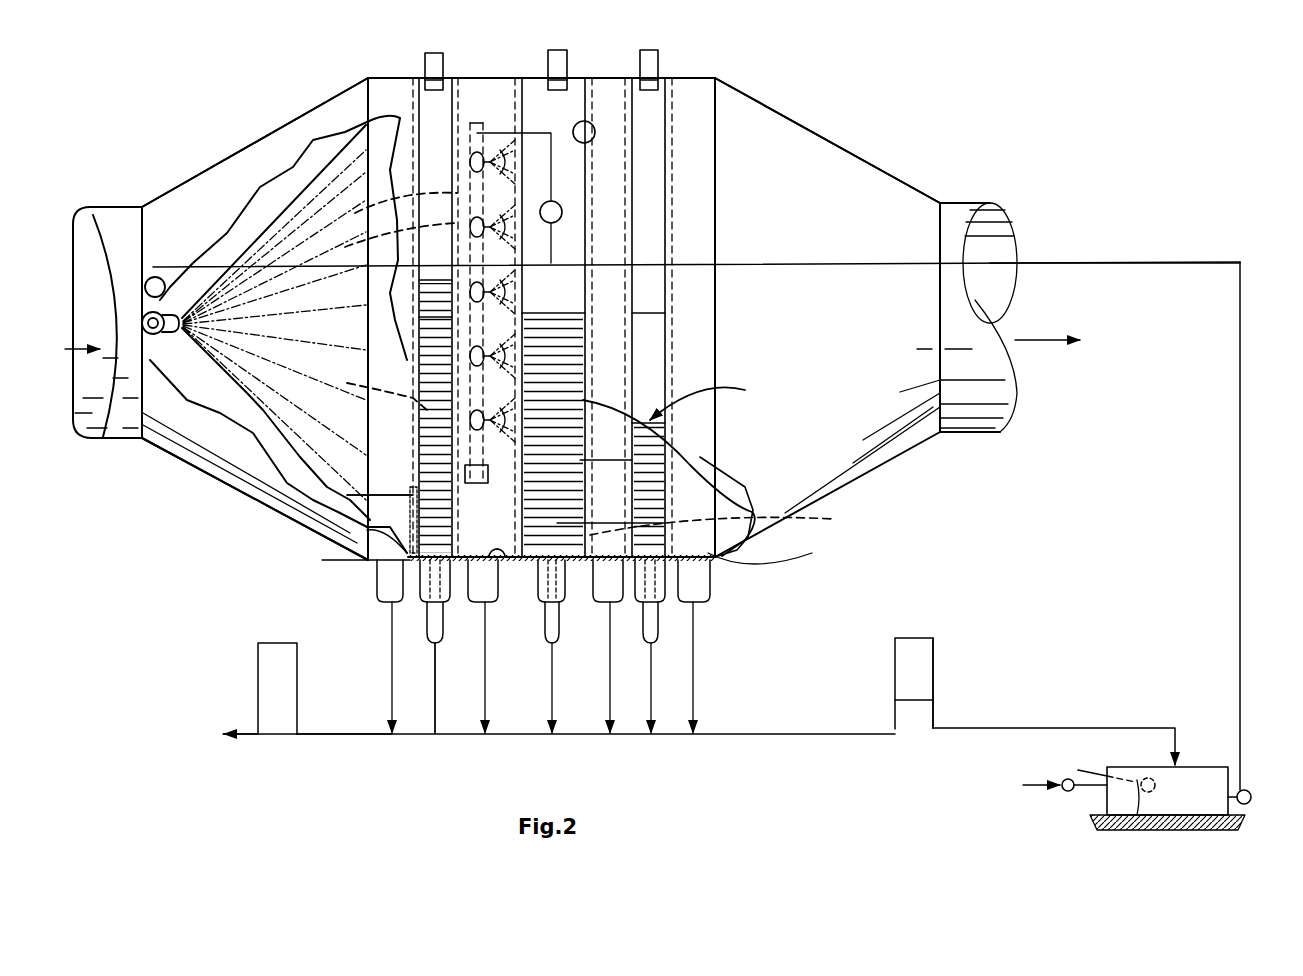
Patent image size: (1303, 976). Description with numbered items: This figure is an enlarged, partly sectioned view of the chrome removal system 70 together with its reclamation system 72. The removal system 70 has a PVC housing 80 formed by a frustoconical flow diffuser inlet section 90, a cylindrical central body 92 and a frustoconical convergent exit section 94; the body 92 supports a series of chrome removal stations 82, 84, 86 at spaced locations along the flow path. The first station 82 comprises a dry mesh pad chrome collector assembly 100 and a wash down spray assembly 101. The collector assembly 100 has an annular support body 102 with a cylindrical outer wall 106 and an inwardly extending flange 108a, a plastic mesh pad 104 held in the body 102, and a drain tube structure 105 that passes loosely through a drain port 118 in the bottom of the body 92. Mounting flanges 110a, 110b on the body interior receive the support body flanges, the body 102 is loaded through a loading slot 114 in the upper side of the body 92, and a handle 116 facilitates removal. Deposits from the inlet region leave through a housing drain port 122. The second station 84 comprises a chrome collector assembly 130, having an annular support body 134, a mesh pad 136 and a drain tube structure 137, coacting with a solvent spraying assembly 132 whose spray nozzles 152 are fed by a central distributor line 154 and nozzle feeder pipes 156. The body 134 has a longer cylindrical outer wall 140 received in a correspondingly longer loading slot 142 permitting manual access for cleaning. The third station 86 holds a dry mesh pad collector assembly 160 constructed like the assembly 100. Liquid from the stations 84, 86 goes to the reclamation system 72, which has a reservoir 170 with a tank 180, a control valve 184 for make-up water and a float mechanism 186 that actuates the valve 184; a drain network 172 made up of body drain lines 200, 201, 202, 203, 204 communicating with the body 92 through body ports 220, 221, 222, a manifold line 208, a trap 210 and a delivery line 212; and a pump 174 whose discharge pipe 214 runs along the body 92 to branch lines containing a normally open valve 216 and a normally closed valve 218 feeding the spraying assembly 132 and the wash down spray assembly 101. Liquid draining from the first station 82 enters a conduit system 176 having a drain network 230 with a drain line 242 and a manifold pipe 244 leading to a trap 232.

The removal system 70 is at (914, 128).
The reclamation system 72 is at (652, 744).
The housing 80 is at (318, 106).
The first station 82 is at (372, 48).
The second station 84 is at (568, 54).
The third station 86 is at (658, 54).
The flow diffuser inlet section 90 is at (243, 453).
The central body 92 is at (370, 95).
The exit section 94 is at (781, 130).
The chrome collector assembly 100 is at (412, 433).
The wash down spray assembly 101 is at (212, 331).
The annular support body 102 is at (427, 477).
The plastic mesh pad 104 is at (369, 388).
The drain tube structure 105 is at (443, 636).
The cylindrical outer wall 106 is at (398, 350).
The inwardly extending flange 108a is at (402, 383).
The mounting flange 110a is at (407, 487).
The mounting flange 110b is at (478, 522).
The loading slot 114 is at (326, 122).
The handle 116 is at (432, 78).
The drain port 118 is at (362, 528).
The housing drain port 122 is at (348, 546).
The chrome collector assembly 130 is at (594, 444).
The solvent spraying assembly 132 is at (700, 457).
The annular support body 134 is at (702, 512).
The plastic mesh pad 136 is at (732, 522).
The drain tube structure 137 is at (560, 608).
The cylindrical outer wall 140 is at (567, 405).
The loading slot 142 is at (592, 141).
The spray nozzles 152 is at (492, 398).
The central distributor line 154 is at (386, 210).
The nozzle feeder pipes 156 is at (378, 241).
The dry mesh pad collector assembly 160 is at (721, 400).
The reservoir 170 is at (1264, 526).
The drain network 172 is at (920, 703).
The pump 174 is at (1254, 782).
The conduit system 176 is at (212, 741).
The tank 180 is at (1200, 800).
The control valve 184 is at (1032, 787).
The float mechanism 186 is at (1137, 818).
The body drain line 200 is at (490, 592).
The body drain line 201 is at (553, 703).
The body drain line 202 is at (630, 684).
The body drain line 203 is at (673, 678).
The body drain line 204 is at (696, 690).
The manifold line 208 is at (775, 732).
The trap 210 is at (912, 638).
The delivery line 212 is at (935, 658).
The discharge pipe 214 is at (1237, 276).
The manually operated valve 216 is at (562, 212).
The manually operated valve 218 is at (148, 279).
The body port 220 is at (496, 556).
The body port 221 is at (780, 555).
The body port 222 is at (693, 562).
The drain network 230 is at (298, 741).
The trap 232 is at (278, 642).
The drain line 242 is at (390, 577).
The manifold pipe 244 is at (413, 729).